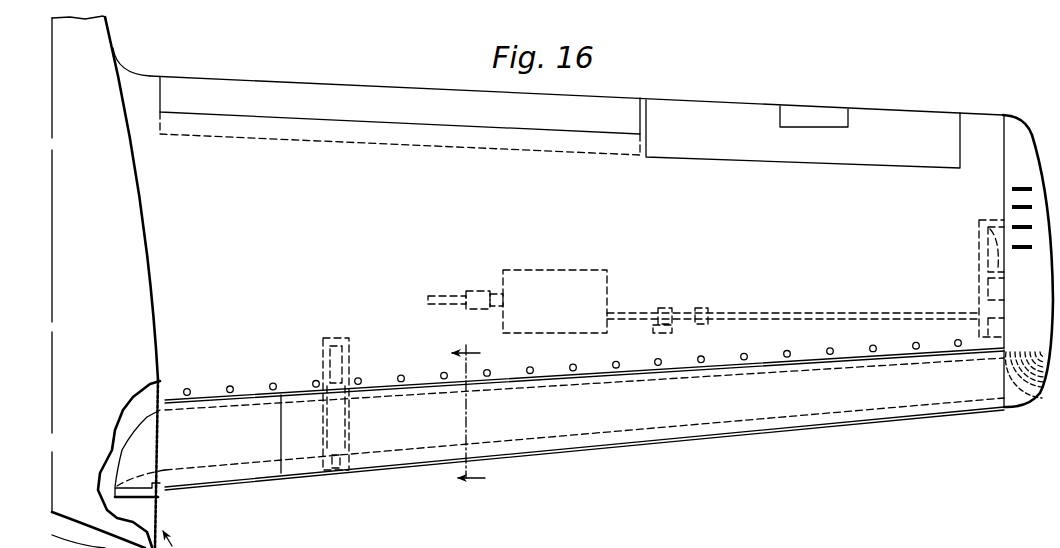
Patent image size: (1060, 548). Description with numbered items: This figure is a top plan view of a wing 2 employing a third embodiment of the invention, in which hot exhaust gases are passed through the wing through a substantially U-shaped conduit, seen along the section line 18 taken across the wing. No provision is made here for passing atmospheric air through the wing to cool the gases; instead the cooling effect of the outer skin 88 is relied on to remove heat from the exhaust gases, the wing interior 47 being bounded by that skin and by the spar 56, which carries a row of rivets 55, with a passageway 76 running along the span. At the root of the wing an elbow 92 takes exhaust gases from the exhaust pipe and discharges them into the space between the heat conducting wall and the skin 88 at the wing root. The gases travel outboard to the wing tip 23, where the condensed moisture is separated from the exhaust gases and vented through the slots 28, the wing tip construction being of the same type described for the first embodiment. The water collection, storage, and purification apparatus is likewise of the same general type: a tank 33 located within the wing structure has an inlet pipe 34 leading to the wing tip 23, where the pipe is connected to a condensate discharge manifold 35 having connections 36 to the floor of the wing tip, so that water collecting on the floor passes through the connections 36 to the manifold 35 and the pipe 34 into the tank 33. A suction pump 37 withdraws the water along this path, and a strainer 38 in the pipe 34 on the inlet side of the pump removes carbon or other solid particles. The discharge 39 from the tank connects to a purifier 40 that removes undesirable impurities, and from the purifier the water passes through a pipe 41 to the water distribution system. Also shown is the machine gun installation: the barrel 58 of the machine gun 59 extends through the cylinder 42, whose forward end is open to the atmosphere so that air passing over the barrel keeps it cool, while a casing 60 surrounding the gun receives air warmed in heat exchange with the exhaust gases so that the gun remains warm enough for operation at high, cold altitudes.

The wing 2 is at (340, 78).
The section line 18 is at (453, 416).
The wing tip 23 is at (1020, 410).
The vent slots 28 is at (1022, 185).
The tank 33 is at (588, 290).
The inlet pipe 34 is at (800, 312).
The condensate discharge manifold 35 is at (982, 252).
The connections 36 is at (985, 216).
The suction pump 37 is at (672, 330).
The strainer 38 is at (707, 306).
The discharge 39 is at (497, 292).
The purifier 40 is at (475, 303).
The pipe 41 is at (455, 296).
The cylinder 42 is at (350, 416).
The wing interior 47 is at (436, 223).
The rivets 55 is at (747, 358).
The spar 56 is at (872, 362).
The barrel 58 is at (335, 470).
The machine gun 59 is at (330, 357).
The casing 60 is at (343, 338).
The passageway 76 is at (655, 432).
The outer skin 88 is at (422, 468).
The elbow 92 is at (152, 425).